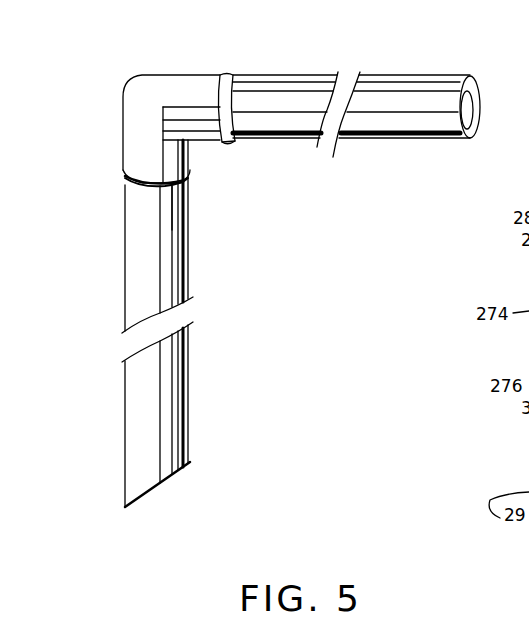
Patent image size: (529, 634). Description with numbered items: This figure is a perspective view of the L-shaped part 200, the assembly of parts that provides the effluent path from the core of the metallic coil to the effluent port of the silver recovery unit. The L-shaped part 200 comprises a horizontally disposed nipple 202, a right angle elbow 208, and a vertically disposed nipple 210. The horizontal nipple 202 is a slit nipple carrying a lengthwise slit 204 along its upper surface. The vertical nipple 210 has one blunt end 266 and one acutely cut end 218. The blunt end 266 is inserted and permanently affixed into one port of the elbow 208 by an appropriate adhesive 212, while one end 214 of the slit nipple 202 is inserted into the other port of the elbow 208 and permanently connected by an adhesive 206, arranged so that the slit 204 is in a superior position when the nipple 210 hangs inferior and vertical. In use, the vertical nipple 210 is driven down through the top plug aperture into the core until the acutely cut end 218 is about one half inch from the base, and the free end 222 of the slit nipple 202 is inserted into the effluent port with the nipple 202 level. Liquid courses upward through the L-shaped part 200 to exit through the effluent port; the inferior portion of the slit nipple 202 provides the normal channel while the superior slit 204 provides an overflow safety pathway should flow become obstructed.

The L-shaped part 200 is at (202, 74).
The horizontally disposed nipple 202 is at (362, 120).
The lengthwise slit 204 is at (482, 92).
The adhesive 206 is at (233, 144).
The right angle elbow 208 is at (124, 80).
The vertically disposed nipple 210 is at (188, 387).
The adhesive 212 is at (168, 200).
The end of slit nipple 214 is at (233, 76).
The acutely cut end 218 is at (150, 492).
The end 222 is at (452, 133).
The blunt end 266 is at (127, 190).